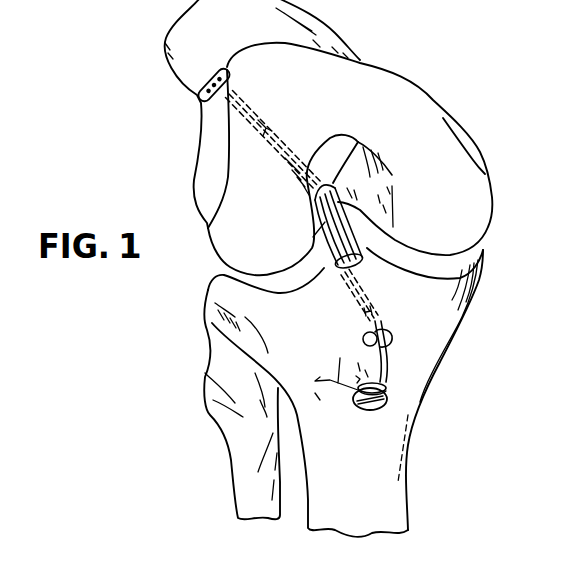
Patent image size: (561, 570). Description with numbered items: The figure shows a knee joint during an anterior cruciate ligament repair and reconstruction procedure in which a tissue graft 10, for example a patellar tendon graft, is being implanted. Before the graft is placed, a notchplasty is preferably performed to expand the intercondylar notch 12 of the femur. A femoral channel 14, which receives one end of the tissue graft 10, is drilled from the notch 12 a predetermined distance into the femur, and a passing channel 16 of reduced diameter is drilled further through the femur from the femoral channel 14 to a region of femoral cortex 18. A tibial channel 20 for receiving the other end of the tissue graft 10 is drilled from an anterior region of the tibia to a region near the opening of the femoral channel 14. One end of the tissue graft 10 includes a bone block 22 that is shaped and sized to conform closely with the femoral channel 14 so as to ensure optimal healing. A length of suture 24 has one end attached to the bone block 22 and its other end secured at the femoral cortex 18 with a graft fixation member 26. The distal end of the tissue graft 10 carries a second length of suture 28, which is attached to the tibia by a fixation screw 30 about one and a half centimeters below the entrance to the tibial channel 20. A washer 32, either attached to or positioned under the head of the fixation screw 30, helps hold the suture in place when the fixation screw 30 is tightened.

The tissue graft 10 is at (345, 208).
The intercondylar notch 12 is at (393, 200).
The femoral channel 14 is at (358, 142).
The passing channel 16 is at (266, 126).
The femoral cortex 18 is at (211, 63).
The tibial channel 20 is at (391, 331).
The bone block 22 is at (291, 176).
The suture 24 is at (273, 137).
The graft fixation member 26 is at (224, 59).
The second length of suture 28 is at (373, 357).
The fixation screw 30 is at (380, 410).
The washer 32 is at (393, 387).